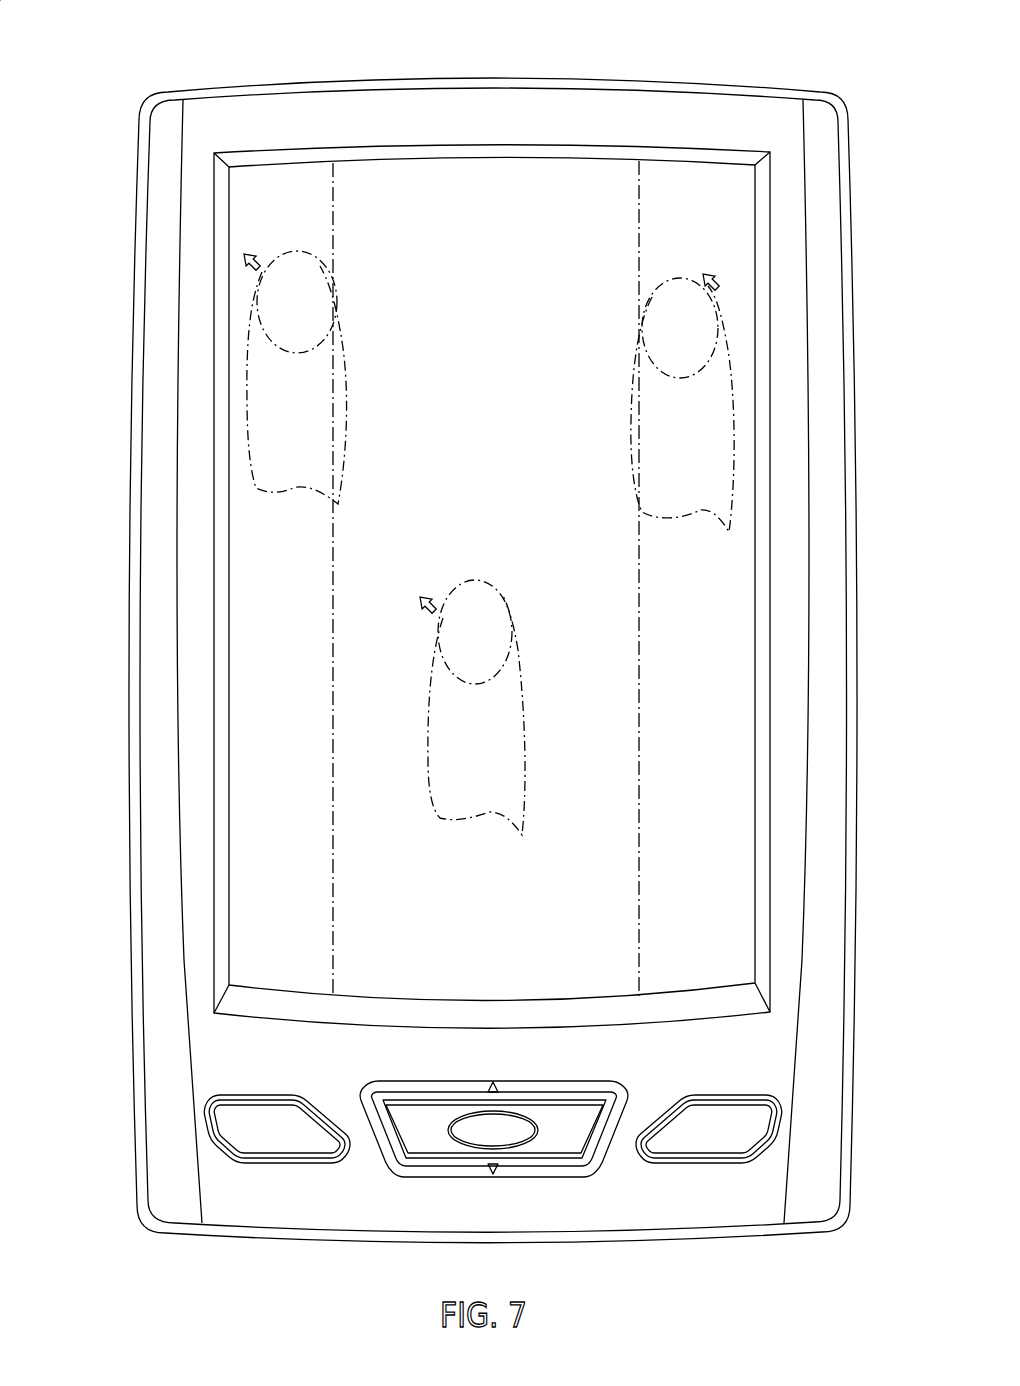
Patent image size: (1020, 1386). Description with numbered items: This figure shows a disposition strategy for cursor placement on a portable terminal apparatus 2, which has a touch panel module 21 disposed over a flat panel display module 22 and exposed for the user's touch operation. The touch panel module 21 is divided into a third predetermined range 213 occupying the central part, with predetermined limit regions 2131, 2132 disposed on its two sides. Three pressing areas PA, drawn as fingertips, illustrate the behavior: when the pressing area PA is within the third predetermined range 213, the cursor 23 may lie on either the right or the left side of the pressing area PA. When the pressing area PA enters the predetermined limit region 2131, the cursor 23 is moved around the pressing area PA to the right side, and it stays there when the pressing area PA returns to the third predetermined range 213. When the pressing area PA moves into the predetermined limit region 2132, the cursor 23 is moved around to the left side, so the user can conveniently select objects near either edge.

The portable terminal apparatus 2 is at (113, 58).
The touch panel module 21 is at (425, 661).
The flat panel display module 22 is at (253, 220).
The third predetermined range 213 is at (410, 170).
The predetermined limit region 2131 is at (735, 713).
The predetermined limit region 2132 is at (240, 642).
The cursor 23 is at (246, 264).
The pressing area PA is at (315, 287).